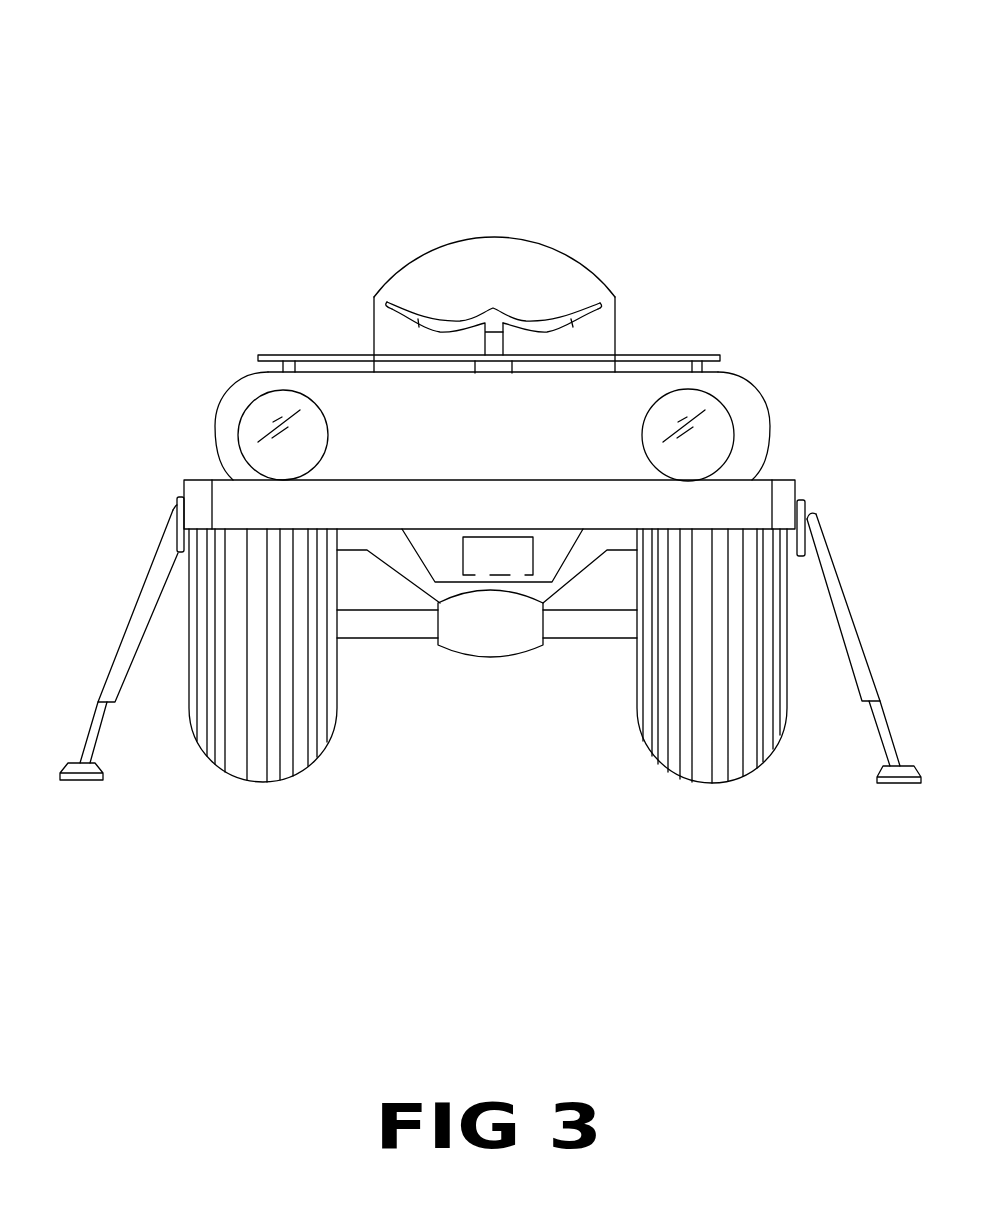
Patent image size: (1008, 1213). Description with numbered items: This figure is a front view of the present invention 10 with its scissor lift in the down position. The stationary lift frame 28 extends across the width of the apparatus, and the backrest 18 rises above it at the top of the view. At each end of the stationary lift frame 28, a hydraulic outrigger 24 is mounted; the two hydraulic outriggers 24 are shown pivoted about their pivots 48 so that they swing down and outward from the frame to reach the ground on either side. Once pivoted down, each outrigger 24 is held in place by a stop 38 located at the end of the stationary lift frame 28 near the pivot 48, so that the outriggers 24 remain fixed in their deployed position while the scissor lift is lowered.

The present invention 10 is at (700, 250).
The backrest 18 is at (442, 248).
The hydraulic outriggers 24 is at (130, 660).
The stationary lift frame 28 is at (200, 480).
The stops 38 is at (182, 493).
The pivot 48 is at (178, 510).